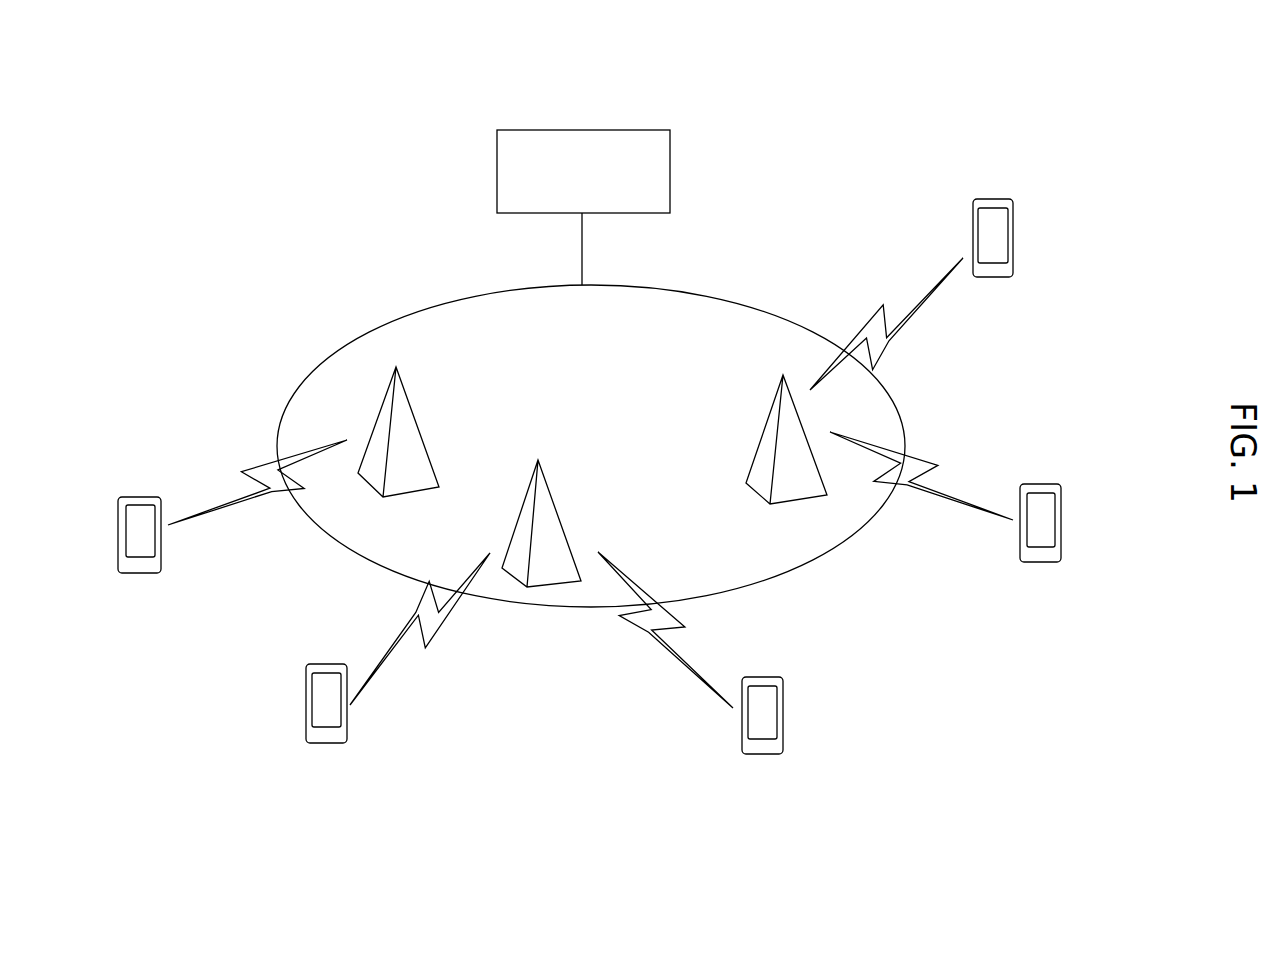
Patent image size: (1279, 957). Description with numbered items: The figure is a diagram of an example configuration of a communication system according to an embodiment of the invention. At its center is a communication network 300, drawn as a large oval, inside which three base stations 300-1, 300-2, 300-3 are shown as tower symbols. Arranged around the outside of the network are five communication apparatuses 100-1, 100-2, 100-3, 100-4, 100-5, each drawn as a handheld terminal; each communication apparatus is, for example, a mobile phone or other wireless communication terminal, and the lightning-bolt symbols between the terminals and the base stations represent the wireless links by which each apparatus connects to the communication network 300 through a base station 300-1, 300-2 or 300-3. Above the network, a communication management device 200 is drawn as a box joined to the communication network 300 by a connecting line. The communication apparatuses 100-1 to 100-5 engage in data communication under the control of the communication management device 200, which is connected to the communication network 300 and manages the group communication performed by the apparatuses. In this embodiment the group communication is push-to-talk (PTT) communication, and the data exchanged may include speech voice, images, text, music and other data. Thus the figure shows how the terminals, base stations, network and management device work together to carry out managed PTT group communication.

The communication management device 200 is at (582, 128).
The communication network 300 is at (458, 297).
The base station 300-1 is at (375, 488).
The base station 300-2 is at (805, 502).
The base station 300-3 is at (527, 588).
The communication apparatus 100-1 is at (141, 575).
The communication apparatus 100-2 is at (992, 278).
The communication apparatus 100-3 is at (1042, 563).
The communication apparatus 100-4 is at (764, 756).
The communication apparatus 100-5 is at (323, 745).